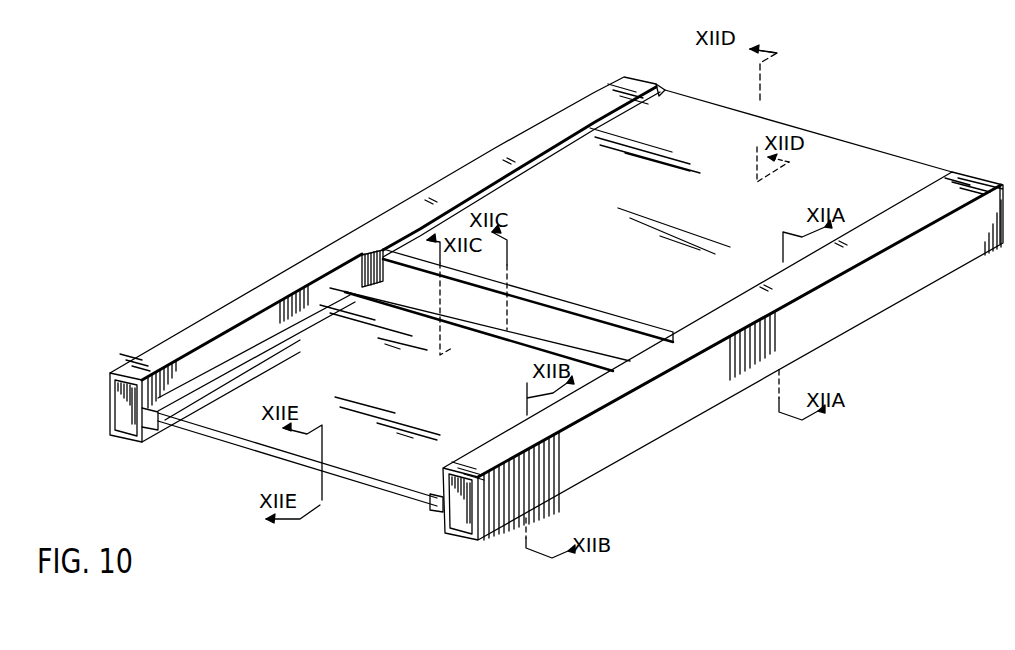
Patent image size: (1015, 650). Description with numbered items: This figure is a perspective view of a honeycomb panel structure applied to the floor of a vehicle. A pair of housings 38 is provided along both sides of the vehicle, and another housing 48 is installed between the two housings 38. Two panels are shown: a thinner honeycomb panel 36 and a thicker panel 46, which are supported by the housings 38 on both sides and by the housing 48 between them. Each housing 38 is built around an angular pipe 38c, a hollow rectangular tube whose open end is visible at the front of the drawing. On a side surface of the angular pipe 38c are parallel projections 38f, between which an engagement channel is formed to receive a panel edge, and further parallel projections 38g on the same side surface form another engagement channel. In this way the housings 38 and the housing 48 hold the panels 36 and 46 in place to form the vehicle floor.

The honeycomb panel 36 is at (237, 444).
The housing 38 is at (165, 350).
The angular pipe 38c is at (110, 412).
The parallel projections 38f is at (152, 432).
The parallel projections 38g is at (664, 89).
The panel 46 is at (840, 148).
The housing 48 is at (390, 262).